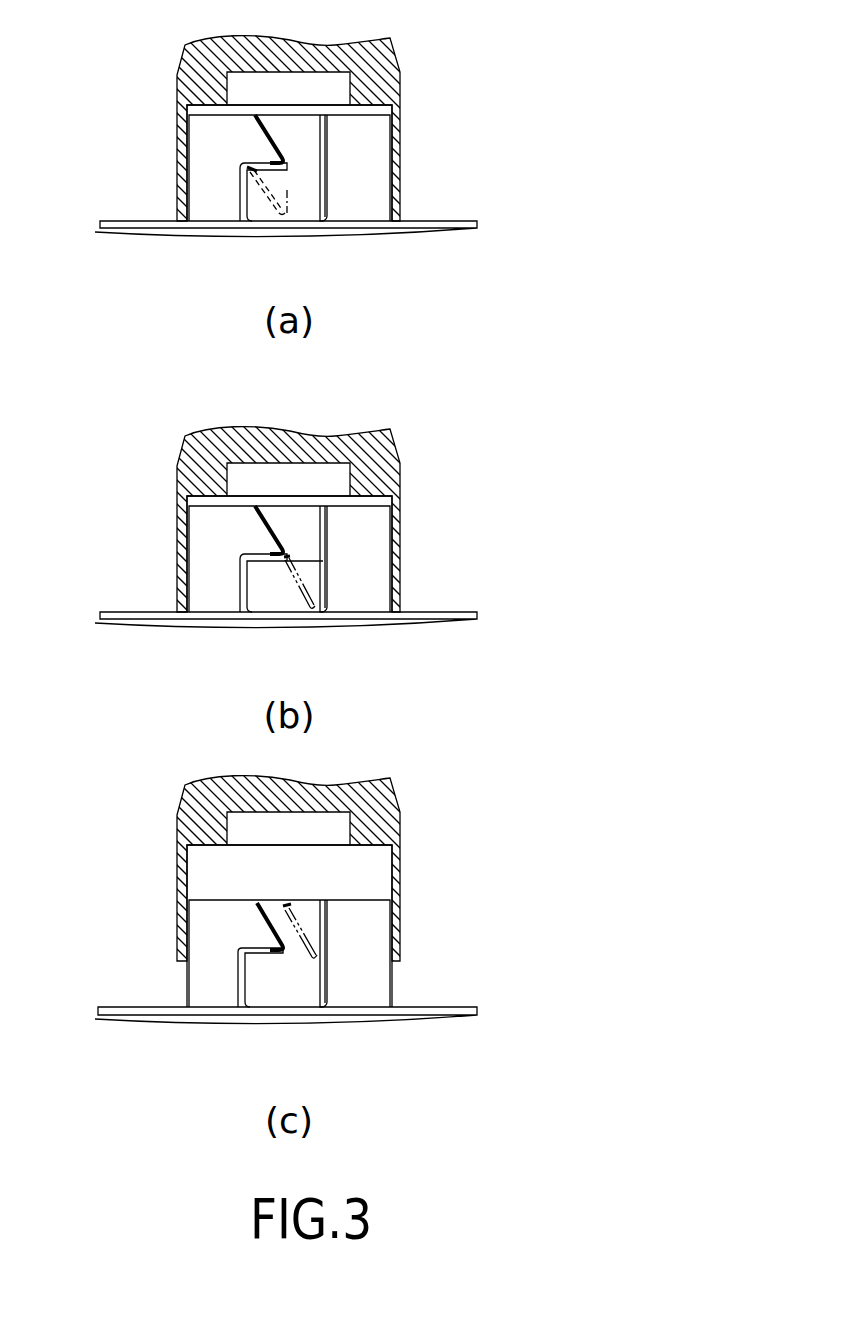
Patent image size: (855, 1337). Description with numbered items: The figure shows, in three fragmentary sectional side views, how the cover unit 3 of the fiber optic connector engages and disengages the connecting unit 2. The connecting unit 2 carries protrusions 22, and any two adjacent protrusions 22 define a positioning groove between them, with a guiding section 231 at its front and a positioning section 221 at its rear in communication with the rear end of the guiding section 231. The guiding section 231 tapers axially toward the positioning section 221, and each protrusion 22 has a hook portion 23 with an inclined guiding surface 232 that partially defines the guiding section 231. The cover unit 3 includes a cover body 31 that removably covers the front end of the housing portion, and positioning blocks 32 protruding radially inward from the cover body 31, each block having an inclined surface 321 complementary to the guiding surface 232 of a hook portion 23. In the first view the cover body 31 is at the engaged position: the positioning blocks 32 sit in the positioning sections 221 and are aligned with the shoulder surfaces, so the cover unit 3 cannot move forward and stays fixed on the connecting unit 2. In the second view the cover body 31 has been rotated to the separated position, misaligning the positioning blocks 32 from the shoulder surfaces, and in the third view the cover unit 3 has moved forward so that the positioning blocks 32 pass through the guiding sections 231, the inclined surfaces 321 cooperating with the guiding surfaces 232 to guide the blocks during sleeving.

The connecting unit 2 is at (317, 595).
The protrusions 22 is at (197, 157).
The positioning section 221 is at (314, 208).
The hook portion 23 is at (297, 543).
The guiding section 231 is at (340, 152).
The guiding surface 232 is at (268, 137).
The cover unit 3 is at (336, 542).
The cover body 31 is at (175, 207).
The positioning blocks 32 is at (319, 612).
The inclined surface 321 is at (266, 205).